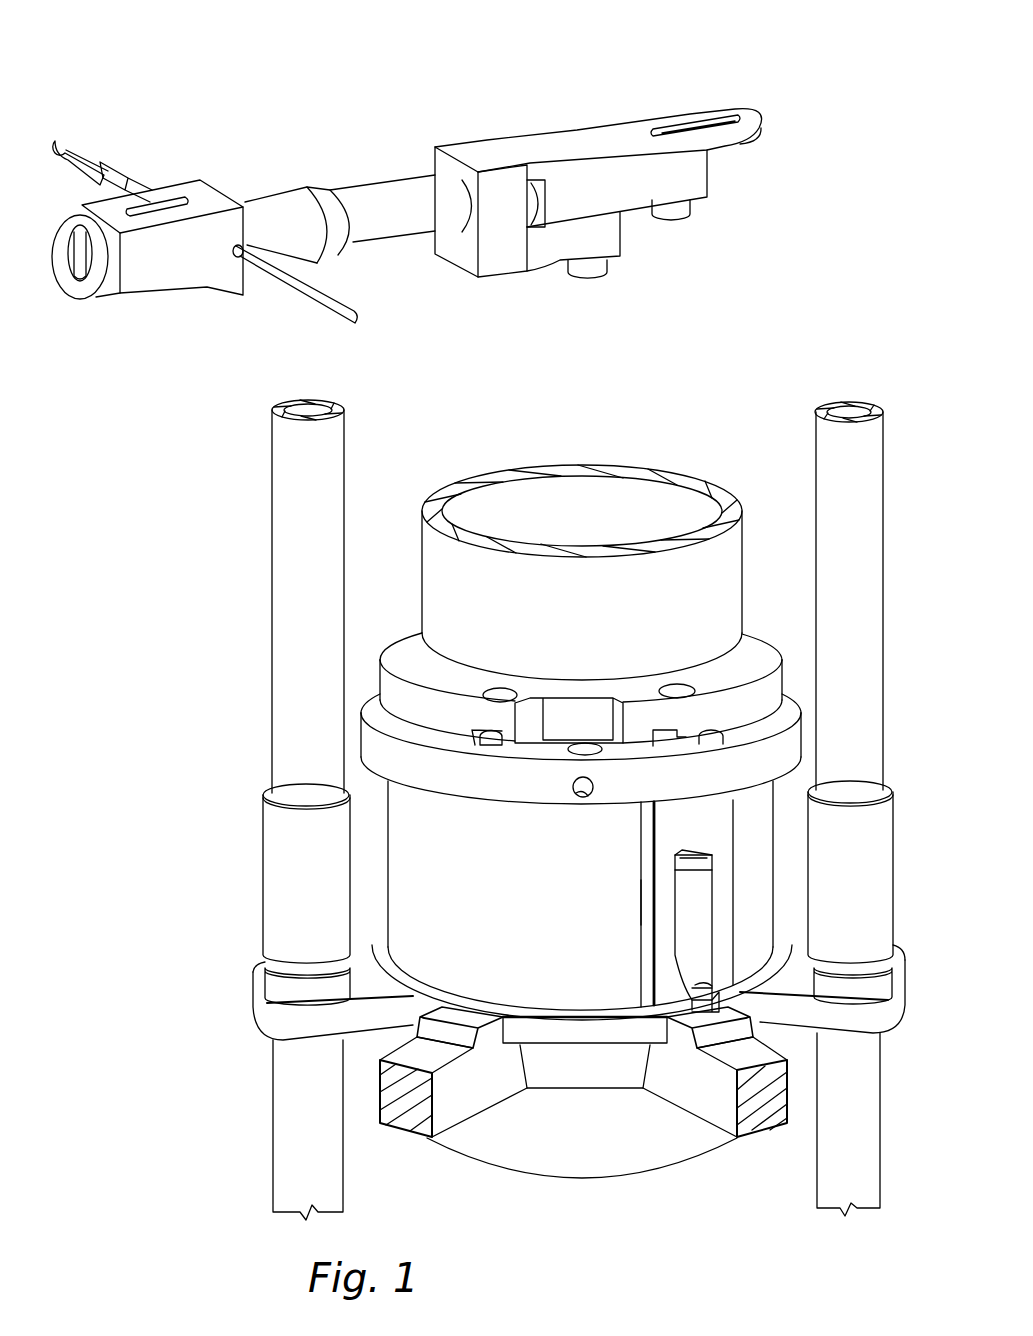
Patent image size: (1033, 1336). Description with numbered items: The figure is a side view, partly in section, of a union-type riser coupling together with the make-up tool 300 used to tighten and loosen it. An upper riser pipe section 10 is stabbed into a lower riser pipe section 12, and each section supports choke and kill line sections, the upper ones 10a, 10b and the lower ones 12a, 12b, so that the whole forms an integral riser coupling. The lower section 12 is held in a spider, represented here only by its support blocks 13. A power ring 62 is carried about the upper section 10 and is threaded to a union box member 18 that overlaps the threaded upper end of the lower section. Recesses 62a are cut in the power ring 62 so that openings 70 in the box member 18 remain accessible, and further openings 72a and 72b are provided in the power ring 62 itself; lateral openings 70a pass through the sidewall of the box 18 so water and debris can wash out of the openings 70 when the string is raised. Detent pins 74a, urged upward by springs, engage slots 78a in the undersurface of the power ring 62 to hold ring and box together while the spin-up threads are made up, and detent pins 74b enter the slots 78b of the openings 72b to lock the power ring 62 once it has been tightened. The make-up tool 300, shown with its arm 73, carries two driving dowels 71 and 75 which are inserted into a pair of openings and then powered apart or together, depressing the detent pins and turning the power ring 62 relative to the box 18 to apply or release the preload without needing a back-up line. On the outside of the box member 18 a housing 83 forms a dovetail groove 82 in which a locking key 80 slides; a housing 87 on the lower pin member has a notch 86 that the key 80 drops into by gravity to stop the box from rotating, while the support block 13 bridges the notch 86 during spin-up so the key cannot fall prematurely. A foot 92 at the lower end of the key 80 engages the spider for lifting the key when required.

The make-up tool 300 is at (366, 155).
The clamp arm 73 is at (460, 136).
The driving dowel 71 is at (584, 278).
The driving dowel 75 is at (677, 220).
The upper riser pipe section 10 is at (490, 466).
The choke and kill line section 10a is at (815, 440).
The choke and kill line section 10b is at (278, 443).
The power ring 62 is at (398, 650).
The recess 62a is at (597, 715).
The opening 72a is at (680, 686).
The opening 72b is at (500, 688).
The opening 70 is at (584, 741).
The lateral opening 70a is at (581, 795).
The detent pin 74a is at (706, 740).
The detent pin 74b is at (494, 745).
The slot 78a is at (668, 732).
The slot 78b is at (476, 740).
The union box member 18 is at (488, 898).
The groove 82 is at (678, 880).
The housing 83 is at (660, 903).
The key 80 is at (700, 933).
The foot 92 is at (690, 973).
The notch 86 is at (668, 1032).
The housing 87 is at (584, 1036).
The support block 13 is at (412, 1125).
The lower riser pipe section 12 is at (541, 1170).
The choke and kill line section 12a is at (826, 1168).
The choke and kill line section 12b is at (275, 1195).